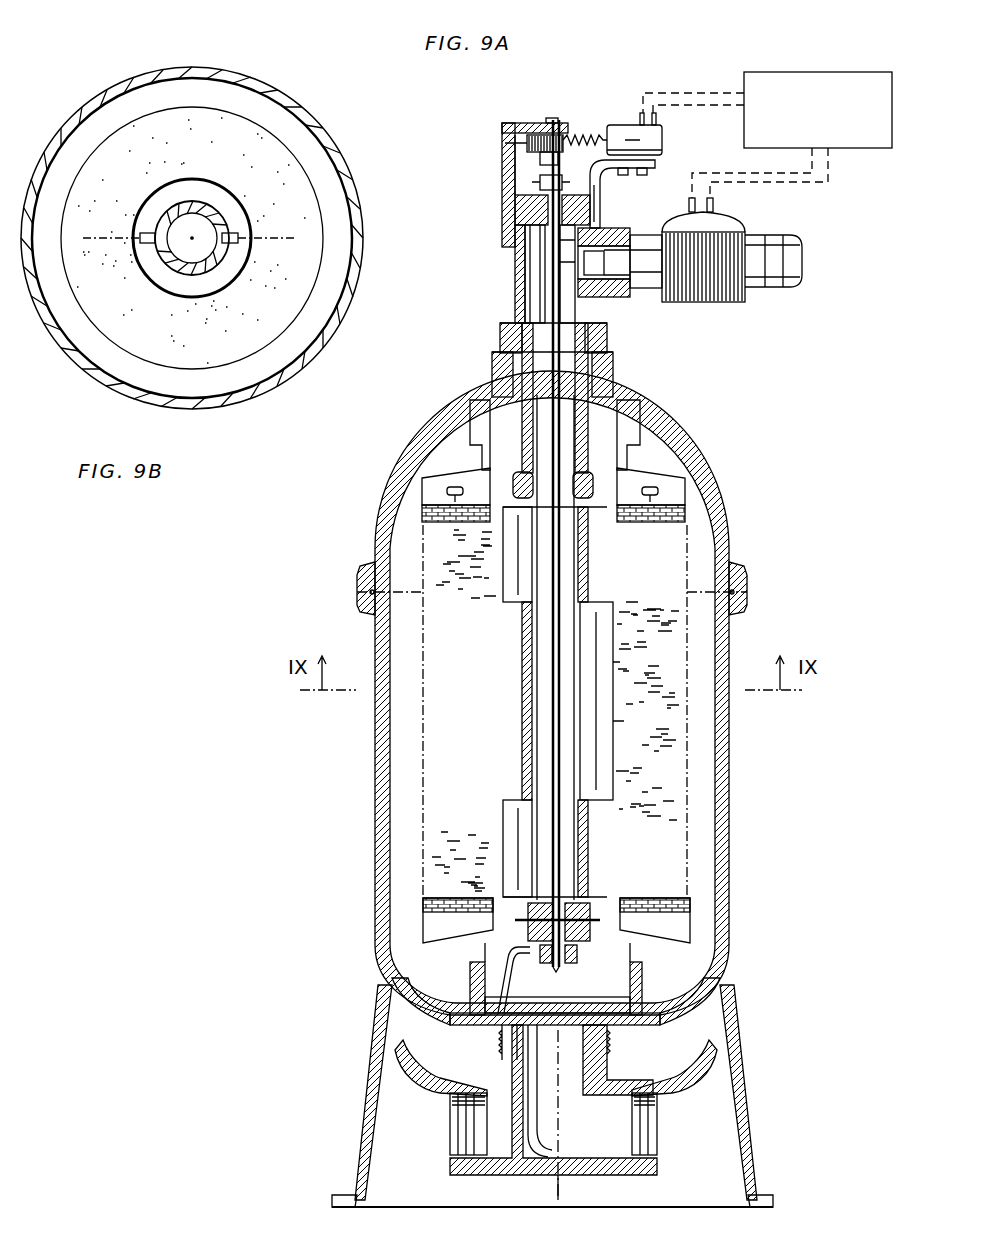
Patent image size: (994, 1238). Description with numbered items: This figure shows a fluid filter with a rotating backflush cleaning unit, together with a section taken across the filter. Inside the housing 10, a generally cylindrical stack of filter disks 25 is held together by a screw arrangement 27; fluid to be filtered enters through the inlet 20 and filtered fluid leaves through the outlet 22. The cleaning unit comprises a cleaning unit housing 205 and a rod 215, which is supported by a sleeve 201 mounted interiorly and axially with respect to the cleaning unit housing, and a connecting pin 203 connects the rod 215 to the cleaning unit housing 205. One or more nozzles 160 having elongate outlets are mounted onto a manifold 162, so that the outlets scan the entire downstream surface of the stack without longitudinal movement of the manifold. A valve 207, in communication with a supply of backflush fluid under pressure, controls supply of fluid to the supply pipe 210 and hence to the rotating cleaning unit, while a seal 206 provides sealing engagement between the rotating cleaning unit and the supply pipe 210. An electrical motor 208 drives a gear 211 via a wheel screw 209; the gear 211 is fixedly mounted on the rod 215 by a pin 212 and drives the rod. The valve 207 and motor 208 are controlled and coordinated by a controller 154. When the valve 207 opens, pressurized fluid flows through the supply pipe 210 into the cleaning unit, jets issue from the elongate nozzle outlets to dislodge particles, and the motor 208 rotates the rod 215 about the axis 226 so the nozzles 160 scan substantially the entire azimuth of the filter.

In FIG. 9A, the housing 10 is at (730, 525).
In FIG. 9B, the housing 10 is at (362, 277).
In FIG. 9A, the inlet 20 is at (450, 1118).
In FIG. 9A, the outlet 22 is at (657, 1120).
In FIG. 9B, the filter disks 25 is at (297, 197).
In FIG. 9A, the screw arrangement 27 is at (667, 492).
In FIG. 9A, the controller 154 is at (765, 72).
In FIG. 9A, the nozzles 160 is at (503, 600).
In FIG. 9B, the nozzles 160 is at (233, 246).
In FIG. 9A, the manifold 162 is at (585, 588).
In FIG. 9B, the manifold 162 is at (219, 200).
In FIG. 9A, the sleeve 201 is at (562, 966).
In FIG. 9A, the connecting pin 203 is at (600, 925).
In FIG. 9A, the cleaning unit housing 205 is at (590, 564).
In FIG. 9B, the cleaning unit housing 205 is at (201, 275).
In FIG. 9A, the seal 206 is at (595, 486).
In FIG. 9A, the valve 207 is at (735, 305).
In FIG. 9A, the electrical motor 208 is at (663, 140).
In FIG. 9A, the wheel screw 209 is at (592, 125).
In FIG. 9A, the supply pipe 210 is at (588, 411).
In FIG. 9A, the gear 211 is at (560, 132).
In FIG. 9A, the pin 212 is at (521, 160).
In FIG. 9A, the rod 215 is at (540, 262).
In FIG. 9A, the axis 226 is at (558, 1183).